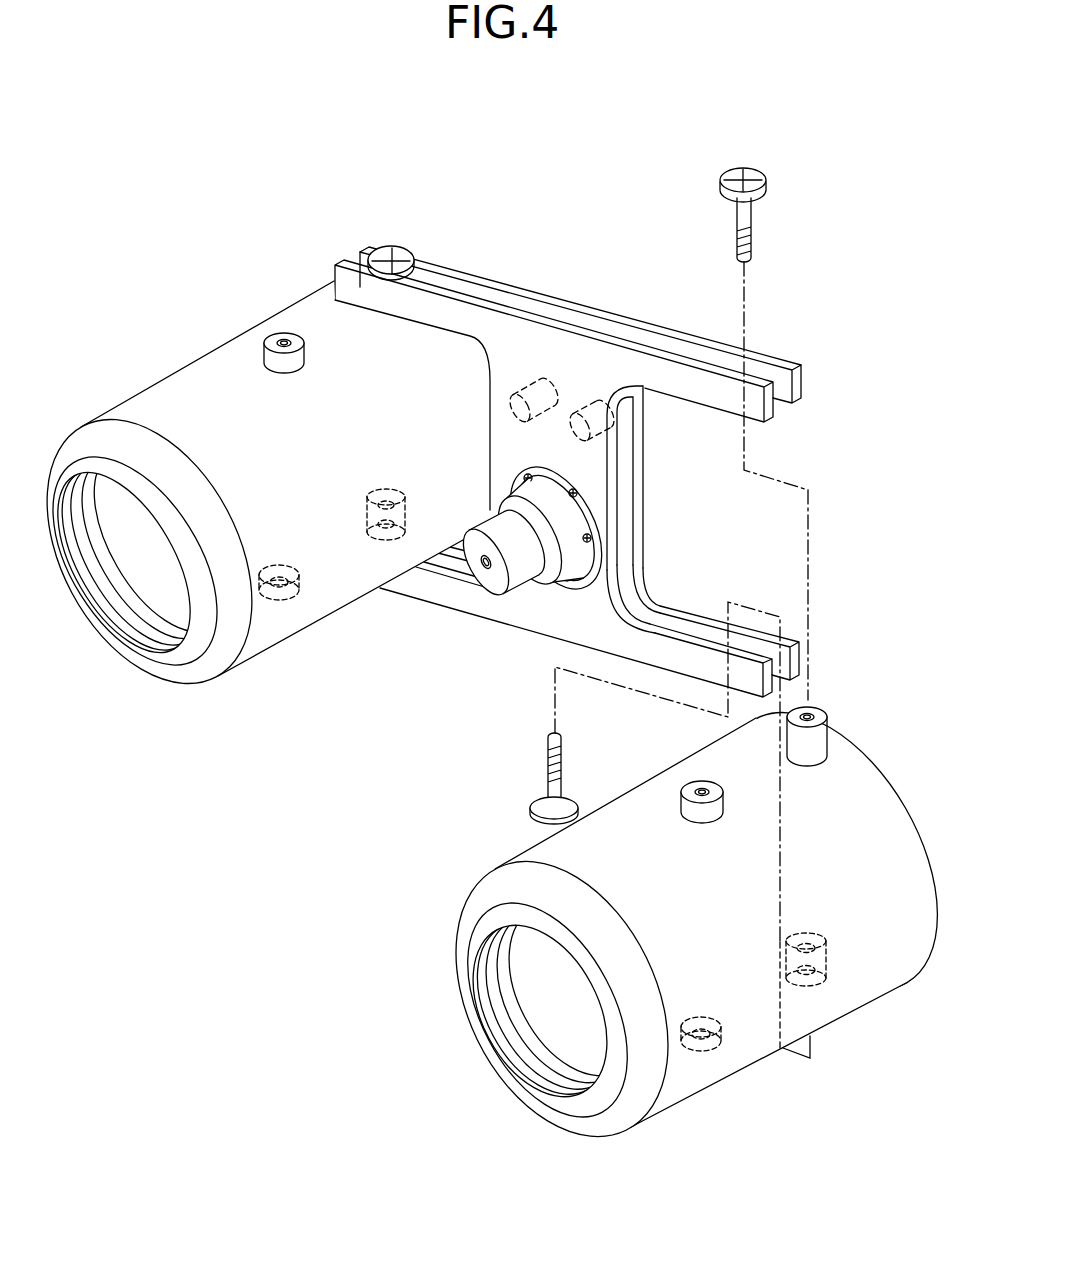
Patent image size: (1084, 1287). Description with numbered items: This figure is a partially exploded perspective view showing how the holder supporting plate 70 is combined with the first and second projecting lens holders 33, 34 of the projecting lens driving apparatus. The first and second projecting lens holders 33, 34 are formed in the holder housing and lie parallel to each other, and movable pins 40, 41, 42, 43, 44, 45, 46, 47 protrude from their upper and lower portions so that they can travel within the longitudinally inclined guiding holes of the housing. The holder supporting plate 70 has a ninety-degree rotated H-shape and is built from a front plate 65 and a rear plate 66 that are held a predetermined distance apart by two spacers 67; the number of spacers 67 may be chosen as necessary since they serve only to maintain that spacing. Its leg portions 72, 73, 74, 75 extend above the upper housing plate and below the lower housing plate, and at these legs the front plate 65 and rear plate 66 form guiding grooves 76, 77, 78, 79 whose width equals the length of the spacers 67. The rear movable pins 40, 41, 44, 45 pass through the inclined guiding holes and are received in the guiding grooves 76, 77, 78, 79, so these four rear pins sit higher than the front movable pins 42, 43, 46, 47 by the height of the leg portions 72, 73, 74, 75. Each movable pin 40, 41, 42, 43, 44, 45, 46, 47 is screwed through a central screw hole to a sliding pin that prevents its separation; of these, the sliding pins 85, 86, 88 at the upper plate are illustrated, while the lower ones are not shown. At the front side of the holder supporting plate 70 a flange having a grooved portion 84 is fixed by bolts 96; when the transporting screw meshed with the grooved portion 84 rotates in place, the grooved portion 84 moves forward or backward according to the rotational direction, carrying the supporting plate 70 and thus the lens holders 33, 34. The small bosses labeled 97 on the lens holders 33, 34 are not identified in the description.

The first projecting lens holder 33 is at (254, 660).
The second projecting lens holder 34 is at (674, 1120).
The movable pin 40 is at (420, 268).
The movable pin 41 is at (831, 732).
The movable pin 42 is at (263, 353).
The movable pin 43 is at (686, 796).
The movable pin 44 is at (387, 542).
The movable pin 45 is at (826, 989).
The movable pin 46 is at (294, 598).
The movable pin 47 is at (717, 1048).
The front plate 65 is at (530, 347).
The rear plate 66 is at (635, 337).
The spacers 67 is at (600, 398).
The holder supporting plate 70 is at (673, 320).
The leg portion 72 is at (345, 288).
The leg portion 73 is at (750, 395).
The leg portion 74 is at (413, 588).
The leg portion 75 is at (668, 648).
The guiding groove 76 is at (450, 283).
The guiding groove 77 is at (698, 360).
The guiding groove 78 is at (450, 567).
The guiding groove 79 is at (728, 640).
The grooved portion 84 is at (483, 570).
The sliding pin 85 is at (392, 245).
The sliding pin 86 is at (766, 181).
The sliding pin 88 is at (535, 808).
The bolts 96 is at (562, 580).
The mounting boss 97 is at (282, 342).